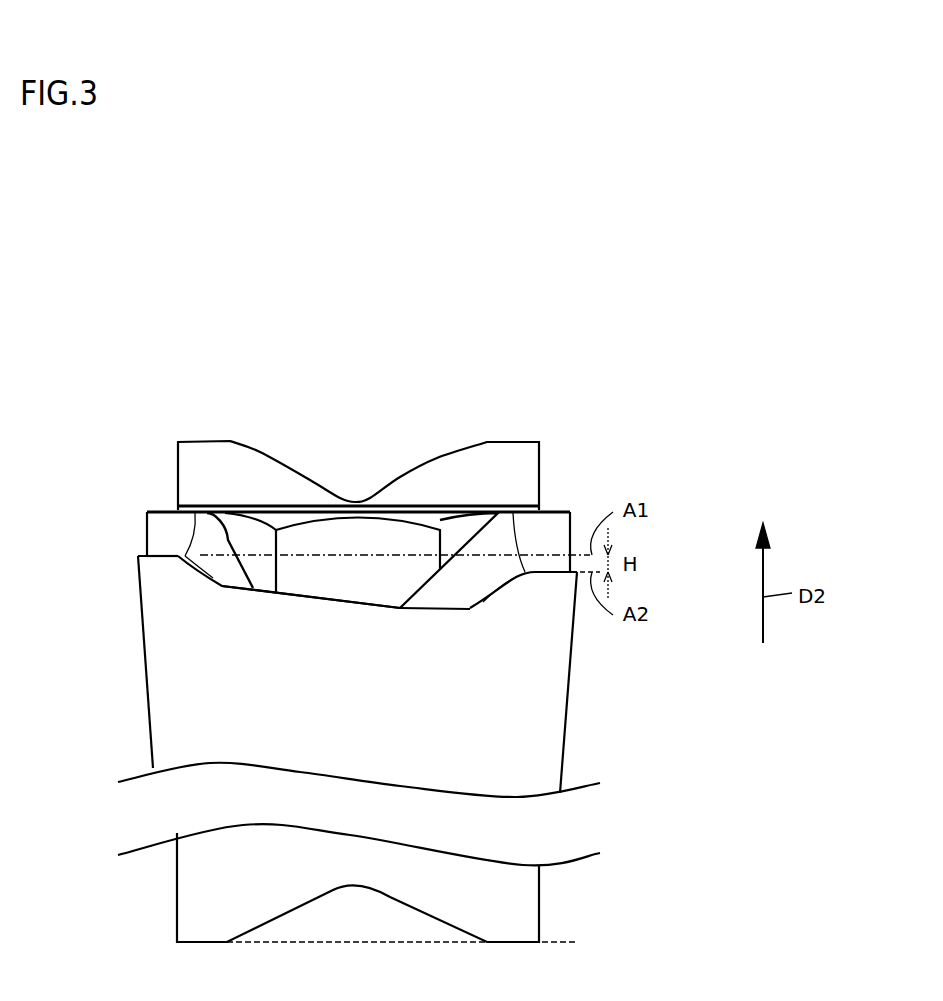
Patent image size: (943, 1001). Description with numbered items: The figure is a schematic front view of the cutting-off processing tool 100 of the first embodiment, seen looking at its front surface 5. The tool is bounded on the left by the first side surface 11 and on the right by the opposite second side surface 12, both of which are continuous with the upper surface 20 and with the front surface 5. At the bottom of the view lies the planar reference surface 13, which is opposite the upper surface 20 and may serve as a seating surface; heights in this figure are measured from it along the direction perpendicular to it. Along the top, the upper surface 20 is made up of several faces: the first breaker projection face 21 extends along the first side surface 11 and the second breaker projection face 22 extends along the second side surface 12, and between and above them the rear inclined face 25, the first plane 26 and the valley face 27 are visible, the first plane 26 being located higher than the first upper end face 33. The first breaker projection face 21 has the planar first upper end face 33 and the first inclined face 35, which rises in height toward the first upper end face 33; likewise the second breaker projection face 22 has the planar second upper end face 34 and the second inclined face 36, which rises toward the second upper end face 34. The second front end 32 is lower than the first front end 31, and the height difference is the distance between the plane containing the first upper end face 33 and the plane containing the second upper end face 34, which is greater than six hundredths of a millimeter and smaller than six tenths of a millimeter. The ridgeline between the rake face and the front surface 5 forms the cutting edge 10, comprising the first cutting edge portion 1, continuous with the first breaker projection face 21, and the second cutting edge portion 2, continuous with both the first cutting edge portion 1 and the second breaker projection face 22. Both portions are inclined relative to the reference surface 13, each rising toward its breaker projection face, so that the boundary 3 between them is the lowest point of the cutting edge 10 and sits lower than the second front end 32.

The cutting-off processing tool 100 is at (584, 226).
The upper surface 20 is at (97, 332).
The first breaker projection face 21 is at (243, 385).
The second breaker projection face 22 is at (478, 385).
The rear inclined face 25 is at (372, 533).
The first plane 26 is at (423, 503).
The valley face 27 is at (332, 483).
The first front end 31 is at (147, 556).
The second front end 32 is at (578, 573).
The first upper end face 33 is at (163, 553).
The second upper end face 34 is at (550, 572).
The first inclined face 35 is at (200, 512).
The second inclined face 36 is at (500, 590).
The front surface 5 is at (255, 683).
The first side surface 11 is at (140, 607).
The second side surface 12 is at (573, 632).
The reference surface 13 is at (513, 942).
The cutting edge 10 is at (628, 658).
The first cutting edge portion 1 is at (347, 605).
The second cutting edge portion 2 is at (463, 614).
The boundary 3 is at (433, 620).